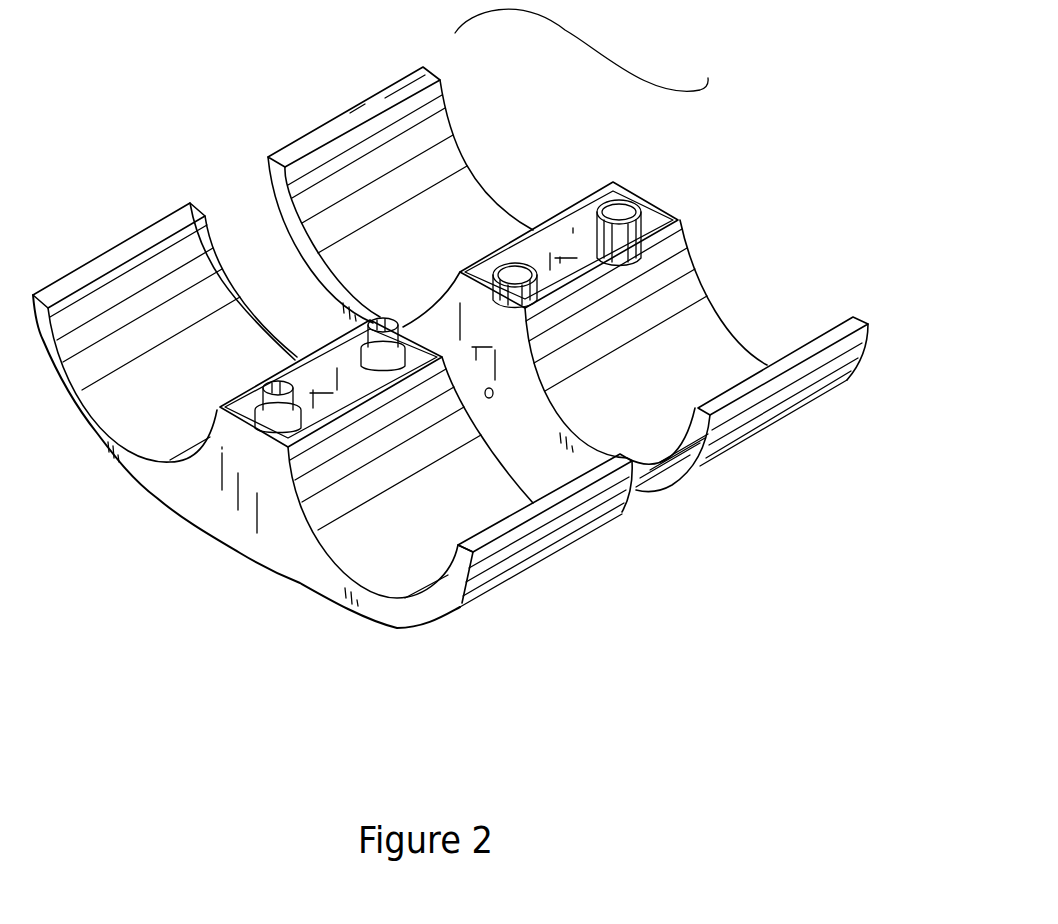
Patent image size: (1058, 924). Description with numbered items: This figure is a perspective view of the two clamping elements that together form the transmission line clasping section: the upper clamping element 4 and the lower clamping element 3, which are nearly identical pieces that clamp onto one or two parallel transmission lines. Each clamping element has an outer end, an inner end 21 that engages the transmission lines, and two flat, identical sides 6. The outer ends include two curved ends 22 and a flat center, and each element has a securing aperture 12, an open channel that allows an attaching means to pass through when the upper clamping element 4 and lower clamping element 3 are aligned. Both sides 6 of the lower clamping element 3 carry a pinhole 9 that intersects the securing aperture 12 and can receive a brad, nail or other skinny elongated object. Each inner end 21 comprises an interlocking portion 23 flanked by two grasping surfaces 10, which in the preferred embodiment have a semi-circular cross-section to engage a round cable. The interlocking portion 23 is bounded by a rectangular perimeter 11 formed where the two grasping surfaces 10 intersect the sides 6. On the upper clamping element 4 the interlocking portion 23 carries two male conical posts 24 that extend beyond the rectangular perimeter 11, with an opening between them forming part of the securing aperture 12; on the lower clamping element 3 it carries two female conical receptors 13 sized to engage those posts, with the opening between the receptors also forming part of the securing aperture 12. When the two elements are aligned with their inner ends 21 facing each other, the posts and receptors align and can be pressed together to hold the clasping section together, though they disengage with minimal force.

The lower clamping element 3 is at (786, 455).
The upper clamping element 4 is at (463, 632).
The sides 6 is at (237, 523).
The pinhole 9 is at (490, 398).
The grasping surfaces 10 is at (153, 417).
The rectangular perimeter 11 is at (233, 250).
The securing aperture 12 is at (443, 318).
The female conical receptors 13 is at (618, 214).
The inner end 21 is at (863, 290).
The curved ends 22 is at (540, 543).
The interlocking portion 23 is at (457, 263).
The male conical posts 24 is at (333, 320).